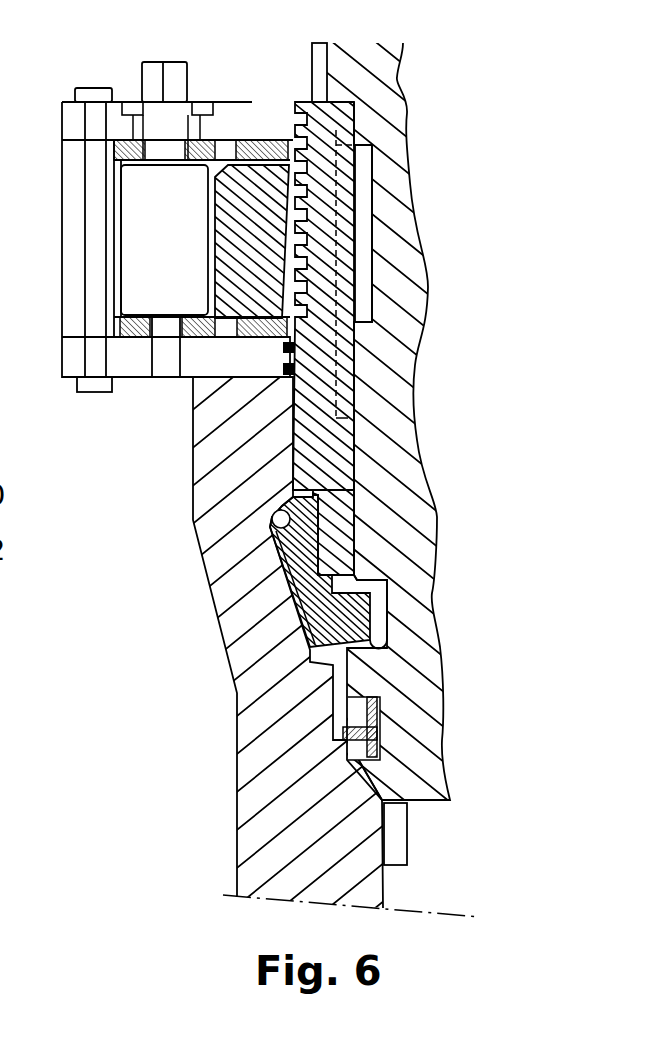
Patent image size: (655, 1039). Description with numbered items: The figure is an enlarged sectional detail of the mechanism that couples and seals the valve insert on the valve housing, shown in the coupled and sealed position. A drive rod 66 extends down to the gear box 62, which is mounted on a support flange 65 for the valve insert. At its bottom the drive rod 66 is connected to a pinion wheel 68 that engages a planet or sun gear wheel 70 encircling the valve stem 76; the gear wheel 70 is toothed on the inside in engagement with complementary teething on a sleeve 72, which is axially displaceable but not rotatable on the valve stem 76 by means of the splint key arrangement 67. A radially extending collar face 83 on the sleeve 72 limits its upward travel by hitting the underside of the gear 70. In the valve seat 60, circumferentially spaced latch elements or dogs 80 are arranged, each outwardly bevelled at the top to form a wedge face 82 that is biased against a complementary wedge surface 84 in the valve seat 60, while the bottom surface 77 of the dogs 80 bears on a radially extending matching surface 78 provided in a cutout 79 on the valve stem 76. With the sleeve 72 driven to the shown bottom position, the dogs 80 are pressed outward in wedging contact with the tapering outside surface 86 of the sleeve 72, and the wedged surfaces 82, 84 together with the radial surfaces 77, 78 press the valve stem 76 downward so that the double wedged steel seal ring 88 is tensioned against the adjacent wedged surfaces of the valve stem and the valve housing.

The valve seat 60 is at (270, 732).
The gear box 62 is at (65, 207).
The support flange 65 is at (67, 105).
The drive rod 66 is at (177, 75).
The splint key arrangement 67 is at (363, 197).
The pinion wheel 68 is at (143, 297).
The planet or sun gear wheel 70 is at (298, 160).
The sleeve 72 is at (327, 277).
The valve stem 76 is at (410, 515).
The bottom surface of the dogs 77 is at (412, 683).
The radially extending matching surface 78 is at (387, 625).
The cutout 79 is at (388, 590).
The latch elements or dogs 80 is at (303, 580).
The wedge face 82 is at (287, 535).
The radially extending collar face 83 is at (303, 335).
The complementary wedge surface 84 is at (285, 510).
The tapering outside surface of the sleeve 86 is at (323, 507).
The double wedged steel seal ring 88 is at (373, 731).